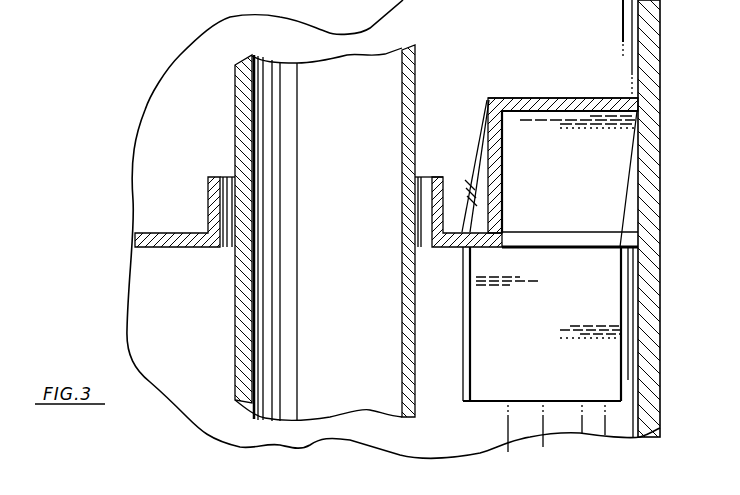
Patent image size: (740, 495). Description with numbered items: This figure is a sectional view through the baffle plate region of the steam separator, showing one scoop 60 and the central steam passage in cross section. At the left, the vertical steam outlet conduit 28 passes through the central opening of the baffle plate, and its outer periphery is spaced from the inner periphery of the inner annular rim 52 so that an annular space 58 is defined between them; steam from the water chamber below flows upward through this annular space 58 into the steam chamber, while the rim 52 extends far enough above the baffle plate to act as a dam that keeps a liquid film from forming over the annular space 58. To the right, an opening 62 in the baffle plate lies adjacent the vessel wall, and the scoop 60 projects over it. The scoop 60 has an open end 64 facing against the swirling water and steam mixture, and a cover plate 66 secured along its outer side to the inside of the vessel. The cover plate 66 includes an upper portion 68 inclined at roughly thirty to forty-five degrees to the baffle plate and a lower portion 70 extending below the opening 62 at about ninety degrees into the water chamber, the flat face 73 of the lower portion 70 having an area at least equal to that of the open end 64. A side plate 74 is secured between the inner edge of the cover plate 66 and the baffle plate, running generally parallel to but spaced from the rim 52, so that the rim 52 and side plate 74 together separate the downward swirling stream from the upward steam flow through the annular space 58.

The vertical steam outlet conduit 28 is at (323, 358).
The inner annular rim 52 is at (215, 208).
The annular space 58 is at (230, 250).
The scoop 60 is at (546, 134).
The opening 62 is at (550, 240).
The open end 64 is at (570, 201).
The cover plate 66 is at (547, 93).
The upper portion 68 is at (567, 105).
The lower portion 70 is at (495, 385).
The flat face 73 is at (511, 343).
The side plate 74 is at (500, 155).